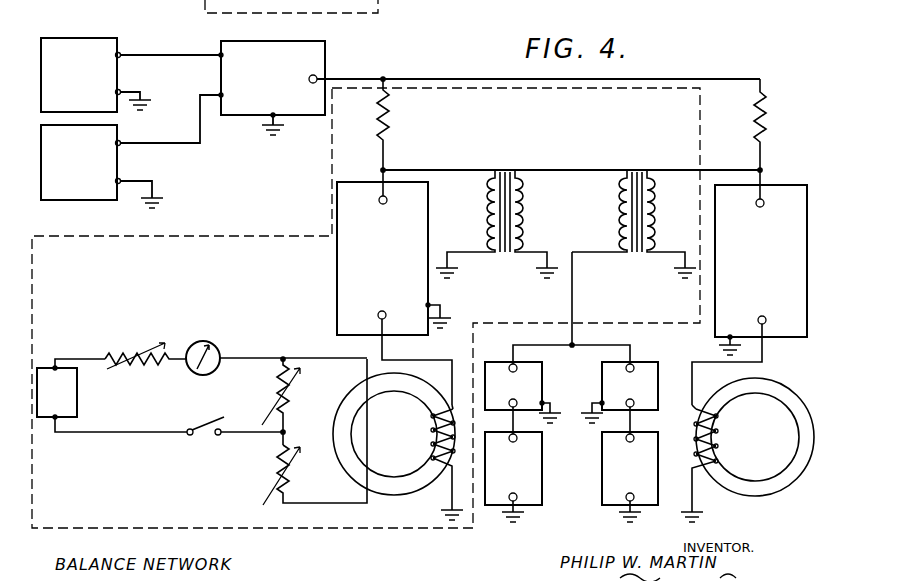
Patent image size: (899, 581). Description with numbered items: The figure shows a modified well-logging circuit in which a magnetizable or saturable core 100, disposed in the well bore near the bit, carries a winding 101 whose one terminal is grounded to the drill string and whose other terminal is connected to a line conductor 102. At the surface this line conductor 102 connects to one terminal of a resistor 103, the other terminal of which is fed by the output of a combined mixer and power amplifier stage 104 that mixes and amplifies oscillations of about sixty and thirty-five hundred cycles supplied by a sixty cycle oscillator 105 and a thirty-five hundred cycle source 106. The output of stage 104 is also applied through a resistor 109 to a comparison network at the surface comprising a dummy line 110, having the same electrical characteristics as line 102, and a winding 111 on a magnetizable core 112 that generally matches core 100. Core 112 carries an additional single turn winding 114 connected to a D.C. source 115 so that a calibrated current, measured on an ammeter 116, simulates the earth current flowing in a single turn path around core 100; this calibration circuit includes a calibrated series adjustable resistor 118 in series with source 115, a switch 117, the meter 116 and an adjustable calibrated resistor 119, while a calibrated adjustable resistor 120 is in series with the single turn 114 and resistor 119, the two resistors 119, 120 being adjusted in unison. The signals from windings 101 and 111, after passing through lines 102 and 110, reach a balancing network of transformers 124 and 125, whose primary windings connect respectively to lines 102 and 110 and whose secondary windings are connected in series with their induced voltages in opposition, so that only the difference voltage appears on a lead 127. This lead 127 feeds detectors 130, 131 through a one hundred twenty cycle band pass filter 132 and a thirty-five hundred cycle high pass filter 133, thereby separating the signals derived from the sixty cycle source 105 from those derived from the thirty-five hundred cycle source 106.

The saturable core 100 is at (744, 497).
The winding 101 is at (712, 444).
The line conductor 102 is at (774, 340).
The resistor 103 is at (765, 108).
The mixer and power amplifier stage 104 is at (328, 60).
The 60 cycle oscillator 105 is at (72, 37).
The 3500 cycle source 106 is at (50, 202).
The resistor 109 is at (388, 124).
The dummy line 110 is at (337, 293).
The winding 111 is at (432, 456).
The magnetizable core 112 is at (390, 496).
The single turn winding 114 is at (366, 428).
The D.C. source 115 is at (78, 397).
The ammeter 116 is at (206, 342).
The switch 117 is at (202, 440).
The calibrated series adjustable resistor 118 is at (122, 356).
The adjustable calibrated resistor 119 is at (285, 398).
The calibrated adjustable resistor 120 is at (285, 487).
The transformer 124 is at (646, 156).
The transformer 125 is at (514, 157).
The lead 127 is at (573, 300).
The detector 130 is at (542, 463).
The detector 131 is at (602, 466).
The 120 cycle band pass filter 132 is at (542, 380).
The 3500 cycle high pass filter 133 is at (672, 350).